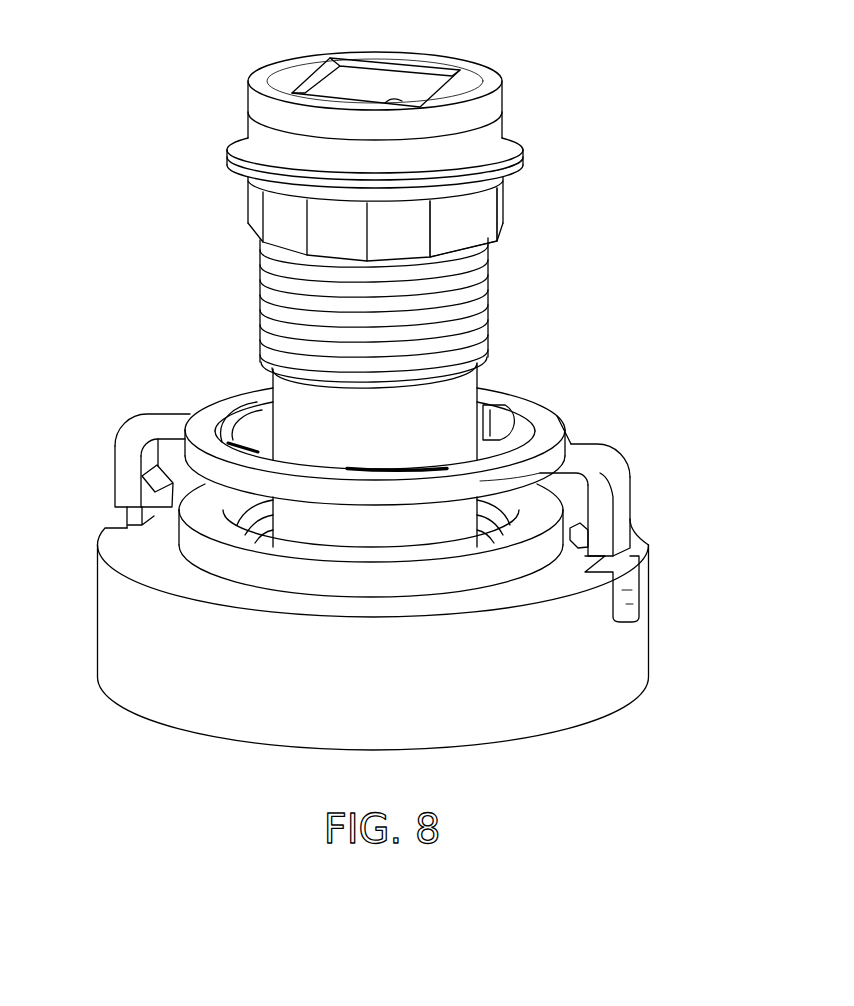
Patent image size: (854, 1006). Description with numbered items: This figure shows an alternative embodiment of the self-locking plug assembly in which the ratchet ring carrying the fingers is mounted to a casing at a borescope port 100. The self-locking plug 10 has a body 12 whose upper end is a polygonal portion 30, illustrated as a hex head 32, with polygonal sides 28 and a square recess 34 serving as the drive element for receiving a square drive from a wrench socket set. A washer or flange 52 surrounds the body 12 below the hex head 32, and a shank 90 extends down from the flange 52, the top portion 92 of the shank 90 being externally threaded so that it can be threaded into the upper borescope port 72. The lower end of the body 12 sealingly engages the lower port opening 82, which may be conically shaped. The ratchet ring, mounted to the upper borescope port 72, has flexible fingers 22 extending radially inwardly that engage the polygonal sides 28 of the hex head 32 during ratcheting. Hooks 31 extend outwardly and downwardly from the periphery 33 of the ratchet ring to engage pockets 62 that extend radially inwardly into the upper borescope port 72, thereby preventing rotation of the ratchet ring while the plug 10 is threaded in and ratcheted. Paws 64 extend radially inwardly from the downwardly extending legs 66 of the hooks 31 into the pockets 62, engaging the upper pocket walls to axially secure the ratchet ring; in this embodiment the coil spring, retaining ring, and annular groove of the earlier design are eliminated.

The self-locking plug 10 is at (250, 432).
The body 12 is at (266, 380).
The flexible fingers 22 is at (488, 412).
The polygonal sides 28 is at (475, 226).
The polygonal portion 30 is at (247, 207).
The hooks 31 is at (186, 405).
The hex head 32 is at (505, 195).
The periphery 33 is at (550, 408).
The square recess 34 is at (421, 87).
The flange 52 is at (522, 156).
The pockets 62 is at (640, 600).
The paws 64 is at (152, 508).
The legs 66 is at (116, 478).
The upper borescope port 72 is at (548, 485).
The lower port opening 82 is at (490, 500).
The shank 90 is at (245, 495).
The top portion 92 is at (489, 310).
The borescope port 100 is at (650, 538).